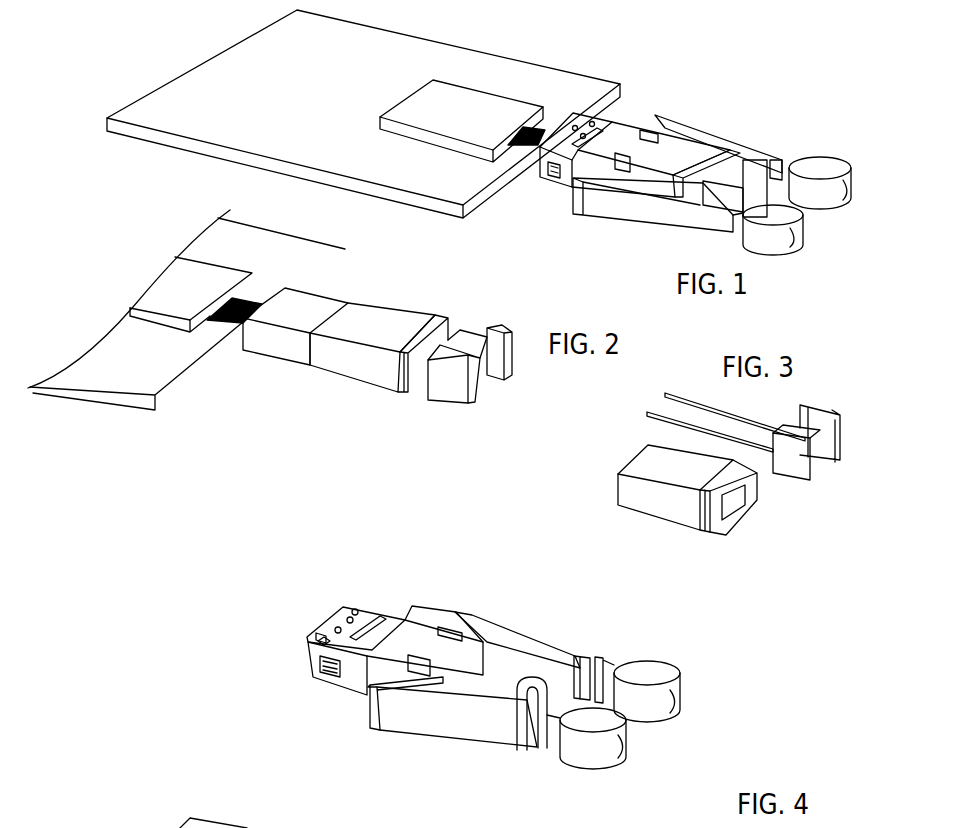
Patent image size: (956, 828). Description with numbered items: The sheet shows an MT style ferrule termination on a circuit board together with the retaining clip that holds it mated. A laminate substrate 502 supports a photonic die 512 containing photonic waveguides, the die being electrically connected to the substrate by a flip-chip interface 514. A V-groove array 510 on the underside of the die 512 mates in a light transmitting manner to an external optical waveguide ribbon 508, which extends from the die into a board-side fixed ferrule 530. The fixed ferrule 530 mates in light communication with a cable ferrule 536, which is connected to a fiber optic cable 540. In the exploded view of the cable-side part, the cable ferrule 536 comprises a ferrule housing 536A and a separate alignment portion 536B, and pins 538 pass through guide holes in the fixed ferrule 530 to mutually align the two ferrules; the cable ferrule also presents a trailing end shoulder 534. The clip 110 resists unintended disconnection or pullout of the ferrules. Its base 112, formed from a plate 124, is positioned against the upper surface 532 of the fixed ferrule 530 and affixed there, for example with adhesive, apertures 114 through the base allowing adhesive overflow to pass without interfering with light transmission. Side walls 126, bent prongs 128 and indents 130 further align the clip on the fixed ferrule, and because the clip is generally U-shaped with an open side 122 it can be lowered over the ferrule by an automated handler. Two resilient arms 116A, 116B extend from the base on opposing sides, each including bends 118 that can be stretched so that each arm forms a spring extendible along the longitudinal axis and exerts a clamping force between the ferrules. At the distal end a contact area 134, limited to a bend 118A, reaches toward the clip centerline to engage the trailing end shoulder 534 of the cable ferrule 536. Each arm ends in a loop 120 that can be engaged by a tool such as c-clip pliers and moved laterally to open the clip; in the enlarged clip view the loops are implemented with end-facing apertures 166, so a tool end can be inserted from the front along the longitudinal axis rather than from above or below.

In FIG. 1, the laminate substrate 502 is at (300, 98).
In FIG. 1, the external optical waveguide ribbon 508 is at (512, 147).
In FIG. 1, the V-groove array 510 is at (505, 127).
In FIG. 1, the photonic die 512 is at (473, 100).
In FIG. 1, the flip-chip interface 514 is at (460, 132).
In FIG. 1, the fixed ferrule 530 is at (620, 130).
In FIG. 2, the fixed ferrule 530 is at (275, 352).
In FIG. 2, the upper surface 532 is at (310, 304).
In FIG. 3, the trailing end shoulder 534 is at (818, 470).
In FIG. 1, the cable ferrule 536 is at (657, 152).
In FIG. 2, the cable ferrule 536 is at (448, 396).
In FIG. 1, the ferrule housing 536A is at (690, 150).
In FIG. 2, the ferrule housing 536A is at (410, 318).
In FIG. 3, the ferrule housing 536A is at (647, 503).
In FIG. 2, the alignment portion 536B is at (445, 393).
In FIG. 3, the alignment portion 536B is at (790, 472).
In FIG. 3, the pins 538 is at (663, 421).
In FIG. 2, the fiber optic cable 540 is at (509, 372).
In FIG. 1, the clip 110 is at (802, 240).
In FIG. 4, the clip 110 is at (288, 604).
In FIG. 4, the base 112 is at (378, 604).
In FIG. 4, the apertures 114 is at (382, 615).
In FIG. 4, the first resilient arm 116A is at (550, 633).
In FIG. 4, the second resilient arm 116B is at (395, 733).
In FIG. 4, the bend 118 is at (368, 705).
In FIG. 4, the bend 118A is at (522, 697).
In FIG. 4, the loop 120 is at (662, 663).
In FIG. 4, the open side 122 is at (458, 720).
In FIG. 4, the plate 124 is at (366, 612).
In FIG. 4, the side walls 126 is at (420, 636).
In FIG. 4, the bent prongs 128 is at (325, 612).
In FIG. 4, the indents 130 is at (318, 672).
In FIG. 4, the contact area 134 is at (578, 660).
In FIG. 4, the apertures 166 is at (682, 700).